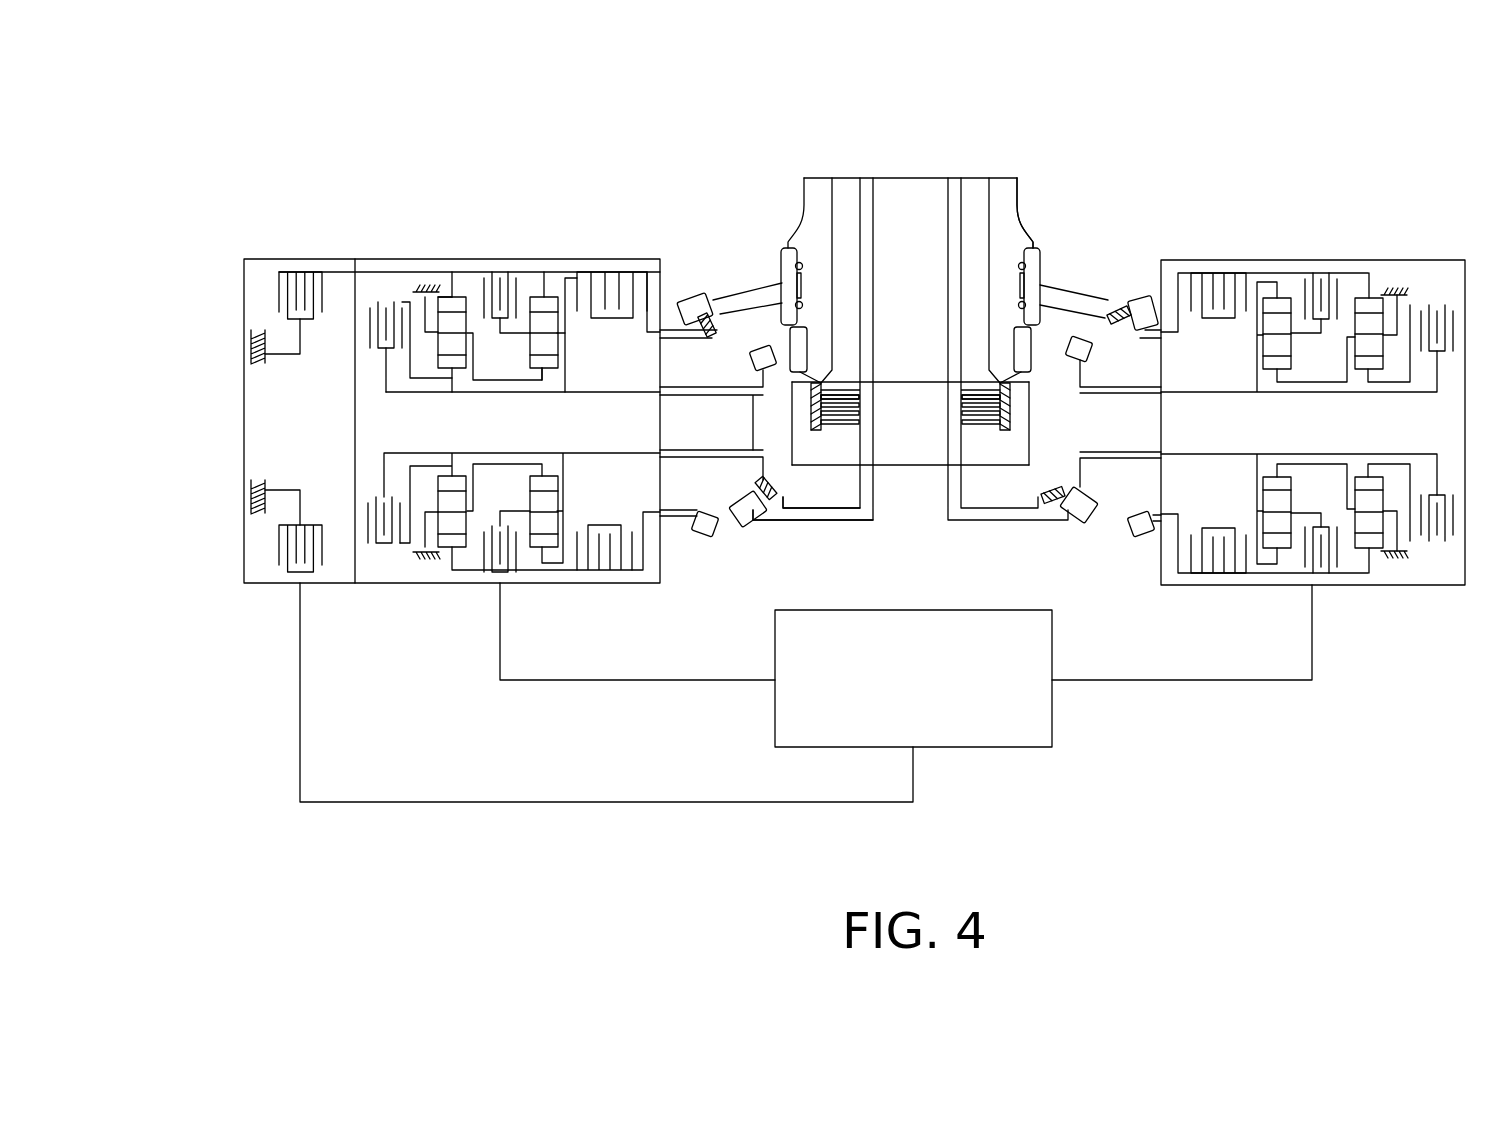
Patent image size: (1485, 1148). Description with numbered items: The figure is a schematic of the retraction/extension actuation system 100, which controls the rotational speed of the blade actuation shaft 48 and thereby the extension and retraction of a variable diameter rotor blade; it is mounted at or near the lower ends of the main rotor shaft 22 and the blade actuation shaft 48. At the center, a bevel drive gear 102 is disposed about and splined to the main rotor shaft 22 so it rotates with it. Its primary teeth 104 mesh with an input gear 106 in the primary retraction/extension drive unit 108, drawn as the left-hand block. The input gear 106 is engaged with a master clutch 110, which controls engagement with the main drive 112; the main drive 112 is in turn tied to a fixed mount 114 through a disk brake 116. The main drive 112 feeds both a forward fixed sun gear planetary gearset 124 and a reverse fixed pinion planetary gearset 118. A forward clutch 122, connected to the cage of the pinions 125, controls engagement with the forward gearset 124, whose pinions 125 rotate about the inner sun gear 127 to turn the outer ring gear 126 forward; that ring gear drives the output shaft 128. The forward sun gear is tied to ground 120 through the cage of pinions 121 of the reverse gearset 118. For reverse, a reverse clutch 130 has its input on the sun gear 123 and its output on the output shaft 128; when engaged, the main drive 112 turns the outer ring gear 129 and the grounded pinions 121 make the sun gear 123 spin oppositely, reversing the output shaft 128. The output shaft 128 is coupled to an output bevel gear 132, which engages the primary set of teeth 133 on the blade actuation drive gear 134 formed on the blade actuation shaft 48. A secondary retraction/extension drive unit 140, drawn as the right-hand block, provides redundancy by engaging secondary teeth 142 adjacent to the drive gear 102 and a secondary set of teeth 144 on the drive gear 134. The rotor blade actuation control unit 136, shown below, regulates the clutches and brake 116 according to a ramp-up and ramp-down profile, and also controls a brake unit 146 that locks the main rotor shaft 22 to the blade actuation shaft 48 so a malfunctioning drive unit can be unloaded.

The main rotor shaft 22 is at (1018, 193).
The blade actuation shaft 48 is at (875, 200).
The retraction/extension actuation system 100 is at (1158, 748).
The bevel drive gear 102 is at (745, 300).
The primary teeth 104 is at (713, 298).
The input gear 106 is at (708, 328).
The primary retraction/extension drive unit 108 is at (517, 160).
The master clutch 110 is at (612, 252).
The main drive 112 is at (532, 297).
The fixed mount 114 is at (298, 337).
The disk brake 116 is at (283, 272).
The reverse fixed pinion planetary gearset 118 is at (442, 282).
The ground 120 is at (422, 302).
The pinions 121 is at (455, 344).
The forward clutch 122 is at (494, 280).
The sun gear 123 is at (457, 368).
The forward fixed sun gear planetary gearset 124 is at (565, 352).
The pinions 125 is at (560, 322).
The outer ring gear 126 is at (549, 305).
The inner sun gear 127 is at (548, 368).
The output shaft 128 is at (450, 395).
The outer ring gear 129 is at (458, 297).
The reverse clutch 130 is at (368, 322).
The output bevel gear 132 is at (758, 450).
The primary set of teeth 133 is at (772, 497).
The blade actuation drive gear 134 is at (838, 520).
The rotor blade actuation control unit 136 is at (990, 735).
The secondary retraction/extension drive unit 140 is at (1298, 228).
The secondary teeth 142 is at (1133, 292).
The secondary set of teeth 144 is at (1075, 523).
The brake unit 146 is at (1040, 440).